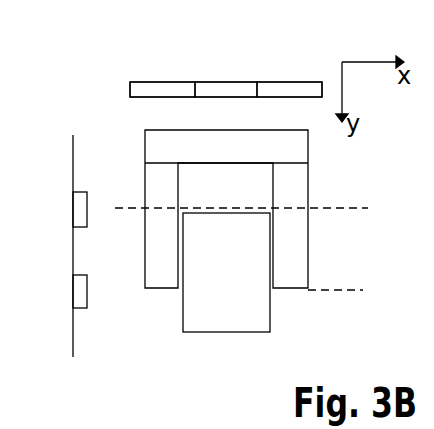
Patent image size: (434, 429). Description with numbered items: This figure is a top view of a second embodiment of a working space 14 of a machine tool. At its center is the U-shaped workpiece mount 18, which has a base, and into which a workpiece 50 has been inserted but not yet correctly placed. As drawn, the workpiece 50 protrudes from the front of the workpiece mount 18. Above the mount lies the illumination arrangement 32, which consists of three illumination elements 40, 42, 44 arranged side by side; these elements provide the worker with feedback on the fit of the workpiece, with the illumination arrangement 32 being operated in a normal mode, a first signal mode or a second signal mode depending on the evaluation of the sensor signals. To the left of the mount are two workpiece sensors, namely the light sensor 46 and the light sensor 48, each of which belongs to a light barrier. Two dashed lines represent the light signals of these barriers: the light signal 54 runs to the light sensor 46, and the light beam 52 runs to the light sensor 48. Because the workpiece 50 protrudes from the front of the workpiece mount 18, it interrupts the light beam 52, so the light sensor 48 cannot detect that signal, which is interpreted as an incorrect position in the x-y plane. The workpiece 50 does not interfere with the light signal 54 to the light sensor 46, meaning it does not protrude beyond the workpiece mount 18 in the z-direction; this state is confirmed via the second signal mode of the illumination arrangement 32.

The working space 14 is at (92, 64).
The workpiece mount 18 is at (145, 257).
The illumination arrangement 32 is at (130, 90).
The illumination element 40 is at (165, 90).
The illumination element 42 is at (222, 90).
The illumination element 44 is at (289, 90).
The light sensor 46 is at (80, 214).
The light sensor 48 is at (80, 290).
The workpiece 50 is at (258, 309).
The light beam 52 is at (340, 290).
The light signal 54 is at (340, 208).